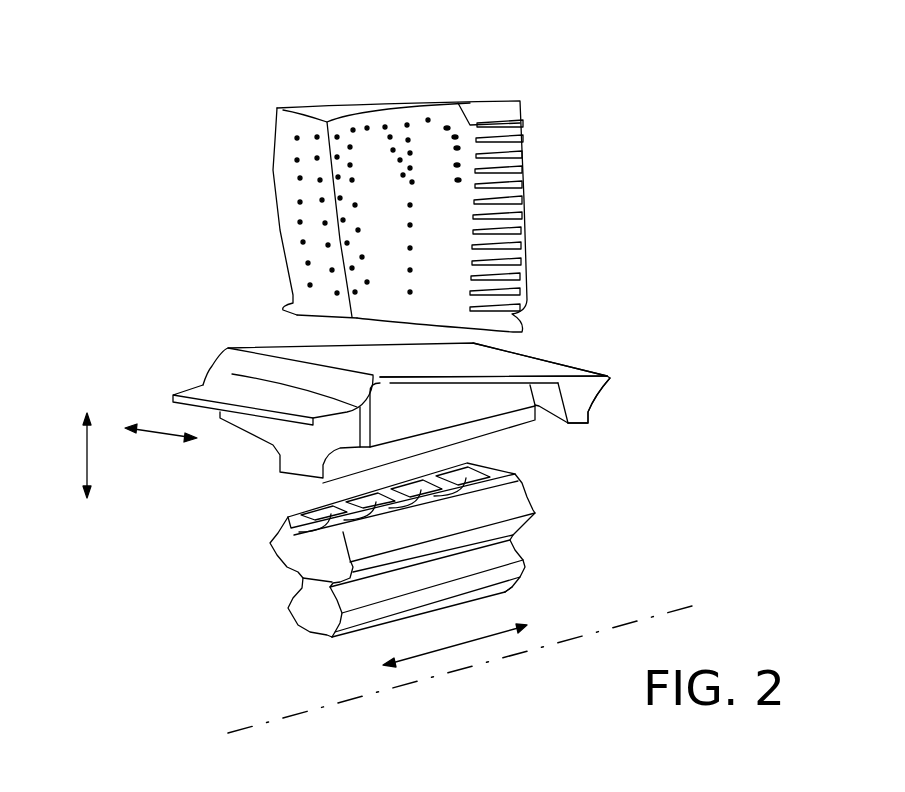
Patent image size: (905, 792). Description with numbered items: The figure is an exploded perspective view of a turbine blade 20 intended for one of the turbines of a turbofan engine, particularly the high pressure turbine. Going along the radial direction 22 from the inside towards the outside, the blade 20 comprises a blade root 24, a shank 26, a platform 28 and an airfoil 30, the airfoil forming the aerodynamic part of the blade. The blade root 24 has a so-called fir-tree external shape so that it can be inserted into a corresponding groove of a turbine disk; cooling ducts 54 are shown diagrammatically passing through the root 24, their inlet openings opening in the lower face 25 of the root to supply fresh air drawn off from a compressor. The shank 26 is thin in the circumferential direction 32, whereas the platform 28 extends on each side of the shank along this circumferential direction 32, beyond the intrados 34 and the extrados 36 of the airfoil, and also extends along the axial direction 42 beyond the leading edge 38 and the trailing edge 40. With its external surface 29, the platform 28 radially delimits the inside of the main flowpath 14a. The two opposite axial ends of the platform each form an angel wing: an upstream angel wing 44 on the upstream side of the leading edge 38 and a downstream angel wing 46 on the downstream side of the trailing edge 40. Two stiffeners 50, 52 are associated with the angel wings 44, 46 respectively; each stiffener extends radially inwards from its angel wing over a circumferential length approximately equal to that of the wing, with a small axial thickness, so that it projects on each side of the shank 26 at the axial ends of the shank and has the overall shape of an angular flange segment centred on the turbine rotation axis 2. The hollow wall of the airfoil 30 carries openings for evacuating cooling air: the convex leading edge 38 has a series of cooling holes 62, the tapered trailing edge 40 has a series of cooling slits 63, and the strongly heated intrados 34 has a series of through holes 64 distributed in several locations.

The axis 2 is at (700, 606).
The main flowpath 14a is at (280, 340).
The blade 20 is at (566, 115).
The radial direction 22 is at (87, 455).
The blade root 24 is at (385, 593).
The lower face 25 is at (480, 597).
The shank 26 is at (408, 408).
The platform 28 is at (239, 376).
The external surface 29 is at (477, 375).
The airfoil 30 is at (531, 169).
The circumferential direction 32 is at (157, 433).
The intrados 34 is at (440, 212).
The extrados 36 is at (383, 108).
The leading edge 38 is at (272, 163).
The trailing edge 40 is at (522, 305).
The axial direction 42 is at (385, 653).
The upstream angel wing 44 is at (205, 383).
The downstream angel wing 46 is at (565, 370).
The stiffener 50 is at (360, 430).
The stiffener 52 is at (592, 417).
The ducts 54 is at (358, 531).
The cooling holes 62 is at (317, 137).
The cooling slits 63 is at (520, 157).
The through holes 64 is at (410, 270).